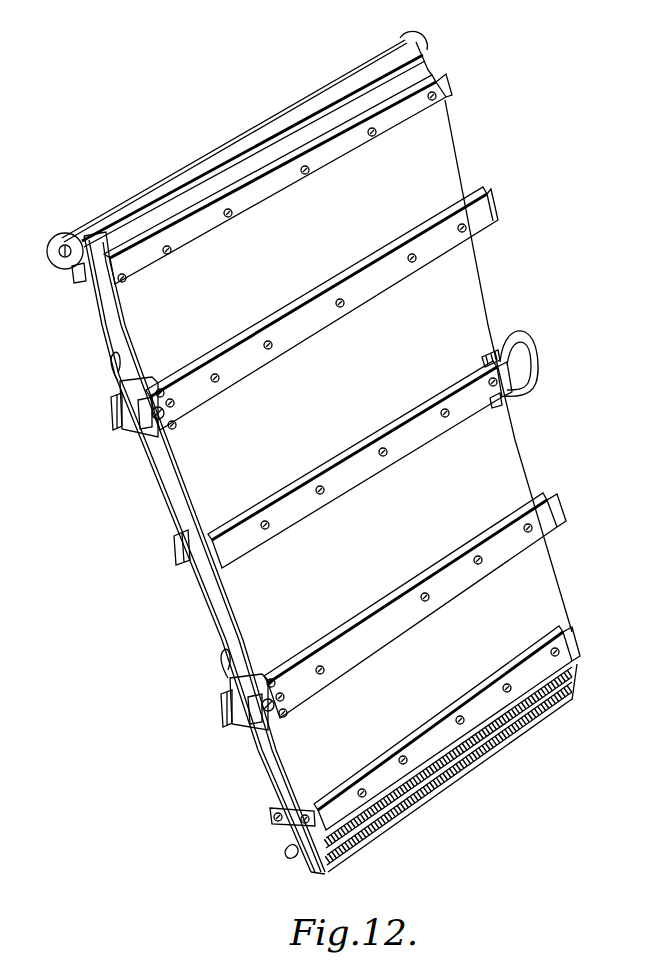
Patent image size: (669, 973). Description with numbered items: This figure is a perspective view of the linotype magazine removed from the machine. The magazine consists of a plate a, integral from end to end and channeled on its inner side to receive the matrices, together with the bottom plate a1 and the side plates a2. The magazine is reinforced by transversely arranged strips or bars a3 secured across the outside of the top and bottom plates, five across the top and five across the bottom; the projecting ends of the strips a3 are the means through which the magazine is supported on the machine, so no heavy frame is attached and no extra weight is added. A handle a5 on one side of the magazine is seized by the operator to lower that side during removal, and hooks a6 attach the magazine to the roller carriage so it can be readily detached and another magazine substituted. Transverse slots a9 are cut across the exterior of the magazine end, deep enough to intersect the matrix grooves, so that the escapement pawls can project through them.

The plate a is at (309, 331).
The bottom plate a1 is at (206, 600).
The side plates a2 is at (312, 878).
The transverse strips or bars a3 is at (262, 838).
The handle a5 is at (528, 390).
The hooks a6 is at (230, 740).
The transverse slots a9 is at (566, 692).